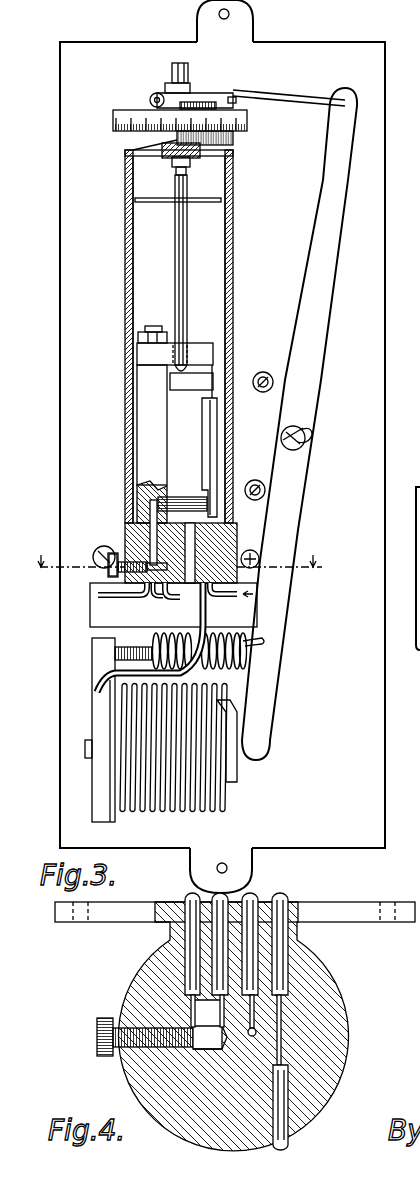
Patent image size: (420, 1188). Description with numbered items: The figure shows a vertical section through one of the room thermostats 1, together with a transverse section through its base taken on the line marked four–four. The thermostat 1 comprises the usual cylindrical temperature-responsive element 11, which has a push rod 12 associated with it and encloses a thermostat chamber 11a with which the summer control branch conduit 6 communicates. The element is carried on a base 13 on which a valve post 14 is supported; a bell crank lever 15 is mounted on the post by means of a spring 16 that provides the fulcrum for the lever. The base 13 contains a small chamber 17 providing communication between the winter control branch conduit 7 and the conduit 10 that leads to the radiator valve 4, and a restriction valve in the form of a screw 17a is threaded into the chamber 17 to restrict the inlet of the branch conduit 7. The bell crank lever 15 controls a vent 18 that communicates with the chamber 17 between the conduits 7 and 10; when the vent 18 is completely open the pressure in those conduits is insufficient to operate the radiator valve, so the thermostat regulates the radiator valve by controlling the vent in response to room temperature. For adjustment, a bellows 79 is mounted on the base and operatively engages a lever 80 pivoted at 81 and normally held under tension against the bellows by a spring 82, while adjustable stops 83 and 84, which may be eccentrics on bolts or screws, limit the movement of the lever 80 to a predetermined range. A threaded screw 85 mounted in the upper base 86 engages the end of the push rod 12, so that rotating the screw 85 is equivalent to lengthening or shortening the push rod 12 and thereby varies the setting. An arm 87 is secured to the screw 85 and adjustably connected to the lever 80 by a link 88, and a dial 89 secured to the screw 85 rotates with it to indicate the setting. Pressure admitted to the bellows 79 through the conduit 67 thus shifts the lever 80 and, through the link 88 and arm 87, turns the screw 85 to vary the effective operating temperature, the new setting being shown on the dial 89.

In FIG. 3, the room thermostat 1 is at (396, 318).
In FIG. 3, the radiator valve 4 is at (180, 553).
In FIG. 3, the summer control branch conduit 6 is at (232, 598).
In FIG. 4, the summer control branch conduit 6 is at (253, 955).
In FIG. 3, the winter control branch conduit 7 is at (118, 598).
In FIG. 4, the winter control branch conduit 7 is at (190, 922).
In FIG. 3, the conduit 10 is at (178, 599).
In FIG. 4, the conduit 10 is at (220, 938).
In FIG. 3, the cylindrical temperature-responsive element 11 is at (229, 290).
In FIG. 3, the thermostat chamber 11a is at (208, 318).
In FIG. 3, the push rod 12 is at (183, 275).
In FIG. 3, the base 13 is at (228, 537).
In FIG. 4, the base 13 is at (345, 1015).
In FIG. 3, the valve post 14 is at (148, 413).
In FIG. 3, the bell crank lever 15 is at (212, 425).
In FIG. 3, the spring 16 is at (213, 367).
In FIG. 3, the small chamber 17 is at (153, 595).
In FIG. 4, the small chamber 17 is at (195, 1050).
In FIG. 3, the restriction valve screw 17a is at (108, 568).
In FIG. 4, the restriction valve screw 17a is at (97, 1040).
In FIG. 3, the vent 18 is at (183, 505).
In FIG. 4, the conduit 67 is at (282, 903).
In FIG. 3, the bellows 79 is at (222, 805).
In FIG. 3, the lever 80 is at (272, 683).
In FIG. 3, the pivot 81 is at (305, 440).
In FIG. 3, the spring 82 is at (237, 645).
In FIG. 3, the adjustable stop 83 is at (257, 481).
In FIG. 3, the adjustable stop 84 is at (265, 371).
In FIG. 3, the threaded screw 85 is at (170, 150).
In FIG. 3, the upper base 86 is at (175, 140).
In FIG. 3, the arm 87 is at (212, 98).
In FIG. 3, the link 88 is at (282, 93).
In FIG. 3, the dial 89 is at (122, 110).